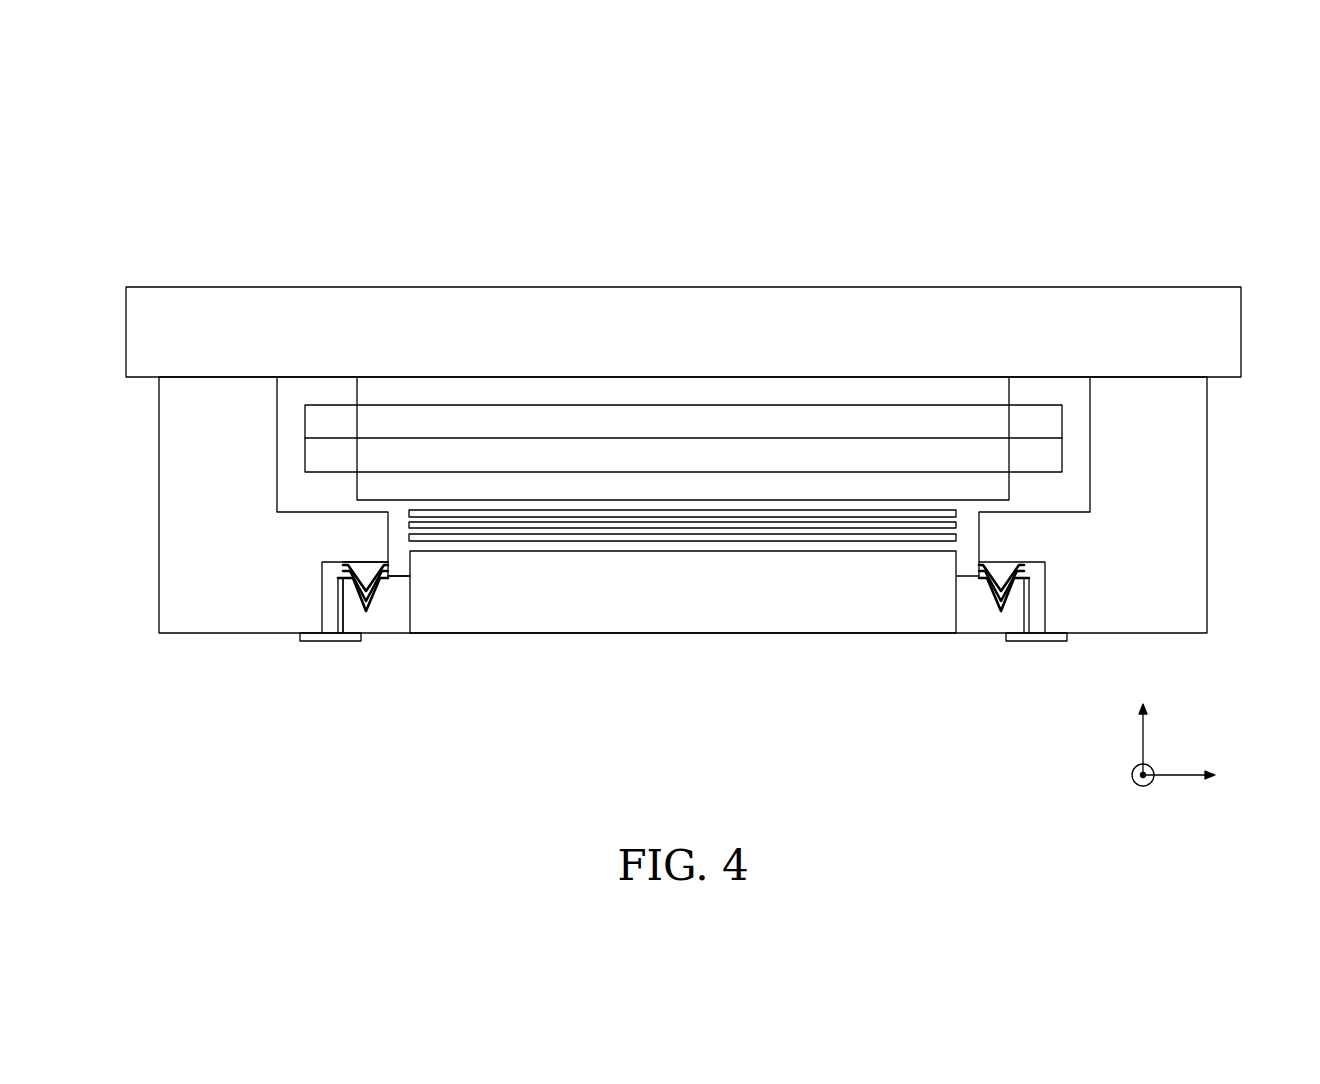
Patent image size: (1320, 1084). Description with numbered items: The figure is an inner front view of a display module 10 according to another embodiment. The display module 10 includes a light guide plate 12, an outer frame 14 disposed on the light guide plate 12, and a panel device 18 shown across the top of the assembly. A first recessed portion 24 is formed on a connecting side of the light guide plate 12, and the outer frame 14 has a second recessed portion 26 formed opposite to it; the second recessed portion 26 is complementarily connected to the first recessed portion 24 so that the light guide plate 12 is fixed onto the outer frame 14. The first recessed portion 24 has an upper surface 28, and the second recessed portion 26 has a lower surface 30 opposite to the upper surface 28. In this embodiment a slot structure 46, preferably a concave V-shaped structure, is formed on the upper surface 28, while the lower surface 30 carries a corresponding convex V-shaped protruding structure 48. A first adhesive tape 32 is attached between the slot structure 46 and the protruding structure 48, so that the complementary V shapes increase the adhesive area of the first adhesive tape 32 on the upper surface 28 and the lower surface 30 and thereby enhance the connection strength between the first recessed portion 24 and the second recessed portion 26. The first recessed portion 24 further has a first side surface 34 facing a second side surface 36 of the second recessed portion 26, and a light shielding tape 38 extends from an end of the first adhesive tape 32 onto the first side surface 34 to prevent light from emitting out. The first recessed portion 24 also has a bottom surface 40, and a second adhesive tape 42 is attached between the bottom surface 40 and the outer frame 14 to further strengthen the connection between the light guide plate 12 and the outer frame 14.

The display module 10 is at (1203, 156).
The light guide plate 12 is at (687, 612).
The outer frame 14 is at (163, 441).
The panel device 18 is at (1028, 298).
The first recessed portion 24 is at (597, 545).
The second recessed portion 26 is at (358, 545).
The upper surface 28 is at (388, 580).
The lower surface 30 is at (341, 606).
The first adhesive tape 32 is at (393, 574).
The first side surface 34 is at (360, 604).
The second side surface 36 is at (329, 568).
The light shielding tape 38 is at (346, 612).
The bottom surface 40 is at (392, 628).
The second adhesive tape 42 is at (316, 641).
The slot structure 46 is at (383, 588).
The protruding structure 48 is at (366, 572).